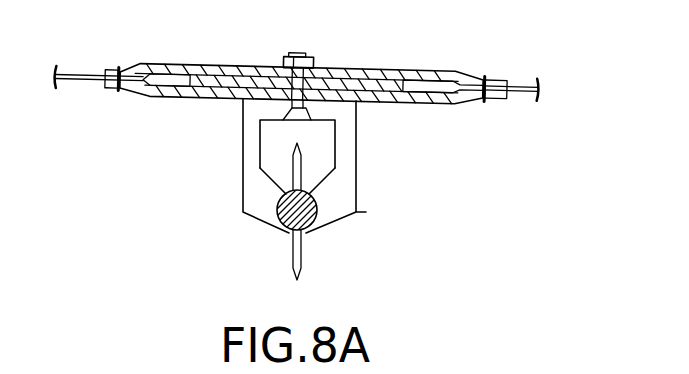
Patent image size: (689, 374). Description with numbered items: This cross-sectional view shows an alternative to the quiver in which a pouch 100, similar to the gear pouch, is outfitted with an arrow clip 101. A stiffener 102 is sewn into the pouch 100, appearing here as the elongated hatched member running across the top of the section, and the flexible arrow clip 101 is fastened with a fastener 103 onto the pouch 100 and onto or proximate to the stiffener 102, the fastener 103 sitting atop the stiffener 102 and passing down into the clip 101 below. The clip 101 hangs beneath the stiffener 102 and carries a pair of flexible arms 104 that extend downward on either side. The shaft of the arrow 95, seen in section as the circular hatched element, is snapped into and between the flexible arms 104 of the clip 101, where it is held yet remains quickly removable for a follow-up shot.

The pouch 100 is at (521, 82).
The arrow clip 101 is at (243, 212).
The stiffener 102 is at (217, 83).
The fastener 103 is at (315, 63).
The flexible arms 104 is at (247, 183).
The arrow 95 is at (303, 215).